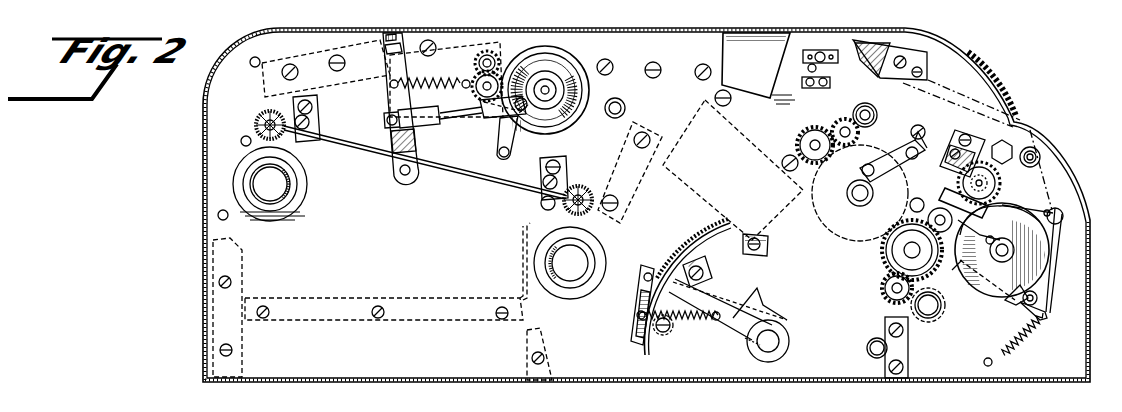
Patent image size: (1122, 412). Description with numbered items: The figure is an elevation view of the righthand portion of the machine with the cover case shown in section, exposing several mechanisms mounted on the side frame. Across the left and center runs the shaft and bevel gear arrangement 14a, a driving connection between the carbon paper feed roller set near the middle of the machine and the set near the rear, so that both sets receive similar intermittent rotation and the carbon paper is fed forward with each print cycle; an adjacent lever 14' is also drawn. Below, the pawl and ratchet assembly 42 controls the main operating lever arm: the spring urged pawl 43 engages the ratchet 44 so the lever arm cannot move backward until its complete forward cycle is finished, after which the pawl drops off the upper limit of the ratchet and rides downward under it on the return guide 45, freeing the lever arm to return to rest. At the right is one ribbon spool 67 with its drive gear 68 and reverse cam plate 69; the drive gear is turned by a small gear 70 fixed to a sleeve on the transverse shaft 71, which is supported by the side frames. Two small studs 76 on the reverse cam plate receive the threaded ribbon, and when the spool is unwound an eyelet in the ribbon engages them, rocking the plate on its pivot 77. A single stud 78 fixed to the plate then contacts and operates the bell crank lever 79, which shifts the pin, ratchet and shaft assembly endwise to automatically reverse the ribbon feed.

The shaft and bevel gear arrangement 14a is at (282, 142).
The lever 14' is at (455, 109).
The pawl and ratchet assembly 42 is at (689, 328).
The pawl 43 is at (636, 330).
The ratchet 44 is at (680, 245).
The return guide 45 is at (710, 253).
The ribbon spool 67 is at (1018, 232).
The drive gear 68 is at (1002, 208).
The reverse cam plate 69 is at (1053, 242).
The small gear 70 is at (990, 184).
The transverse shaft 71 is at (980, 182).
The small studs 76 is at (1056, 208).
The pivot 77 is at (1037, 298).
The single stud 78 is at (950, 274).
The bell crank lever 79 is at (973, 167).